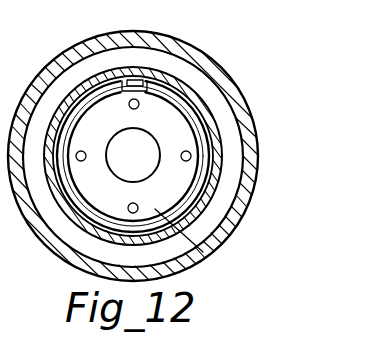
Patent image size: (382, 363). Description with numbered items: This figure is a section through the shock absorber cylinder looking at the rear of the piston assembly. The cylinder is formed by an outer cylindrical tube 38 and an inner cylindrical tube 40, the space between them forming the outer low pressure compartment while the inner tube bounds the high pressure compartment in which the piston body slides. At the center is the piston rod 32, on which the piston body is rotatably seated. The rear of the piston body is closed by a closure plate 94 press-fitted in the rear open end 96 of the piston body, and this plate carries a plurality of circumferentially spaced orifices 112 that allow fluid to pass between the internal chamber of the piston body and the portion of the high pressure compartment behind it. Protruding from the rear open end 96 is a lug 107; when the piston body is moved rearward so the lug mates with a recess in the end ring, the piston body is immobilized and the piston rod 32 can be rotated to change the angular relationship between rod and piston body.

The outer cylindrical tube 38 is at (242, 37).
The inner cylindrical tube 40 is at (221, 133).
The rear open end of the piston body 96 is at (204, 176).
The closure plate 94 is at (203, 252).
The piston rod 32 is at (148, 162).
The protruding lug 107 is at (141, 83).
The orifices 112 is at (187, 151).